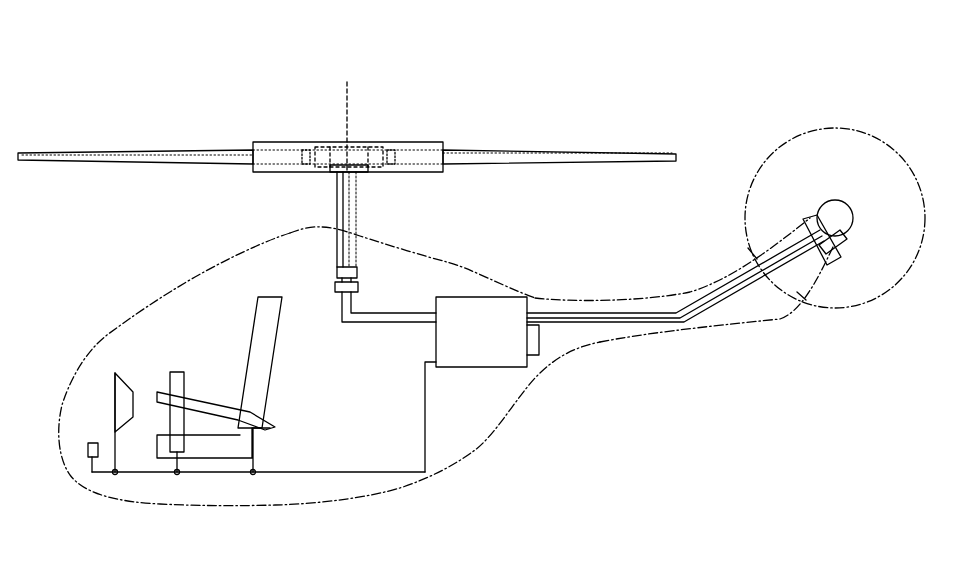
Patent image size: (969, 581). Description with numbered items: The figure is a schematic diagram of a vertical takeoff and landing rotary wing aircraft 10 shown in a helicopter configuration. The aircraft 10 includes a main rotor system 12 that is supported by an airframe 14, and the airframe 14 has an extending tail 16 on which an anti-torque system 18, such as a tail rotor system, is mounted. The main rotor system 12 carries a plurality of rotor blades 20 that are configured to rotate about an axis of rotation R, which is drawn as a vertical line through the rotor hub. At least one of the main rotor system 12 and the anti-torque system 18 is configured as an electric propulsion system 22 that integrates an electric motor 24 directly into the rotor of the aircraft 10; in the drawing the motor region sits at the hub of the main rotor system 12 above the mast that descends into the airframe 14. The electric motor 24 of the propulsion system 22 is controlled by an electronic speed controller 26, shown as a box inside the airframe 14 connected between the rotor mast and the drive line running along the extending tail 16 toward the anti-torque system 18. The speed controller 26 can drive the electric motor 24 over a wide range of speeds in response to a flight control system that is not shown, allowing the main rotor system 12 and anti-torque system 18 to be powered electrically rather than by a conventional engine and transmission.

The vertical takeoff and landing rotary wing aircraft 10 is at (181, 51).
The main rotor system 12 is at (325, 125).
The airframe 14 is at (446, 258).
The extending tail 16 is at (652, 340).
The anti-torque system 18 is at (893, 144).
The rotor blades 20 is at (500, 150).
The electric propulsion system 22 is at (314, 188).
The electric motor 24 is at (358, 162).
The electronic speed controller 26 is at (530, 302).
The axis of rotation R is at (351, 91).